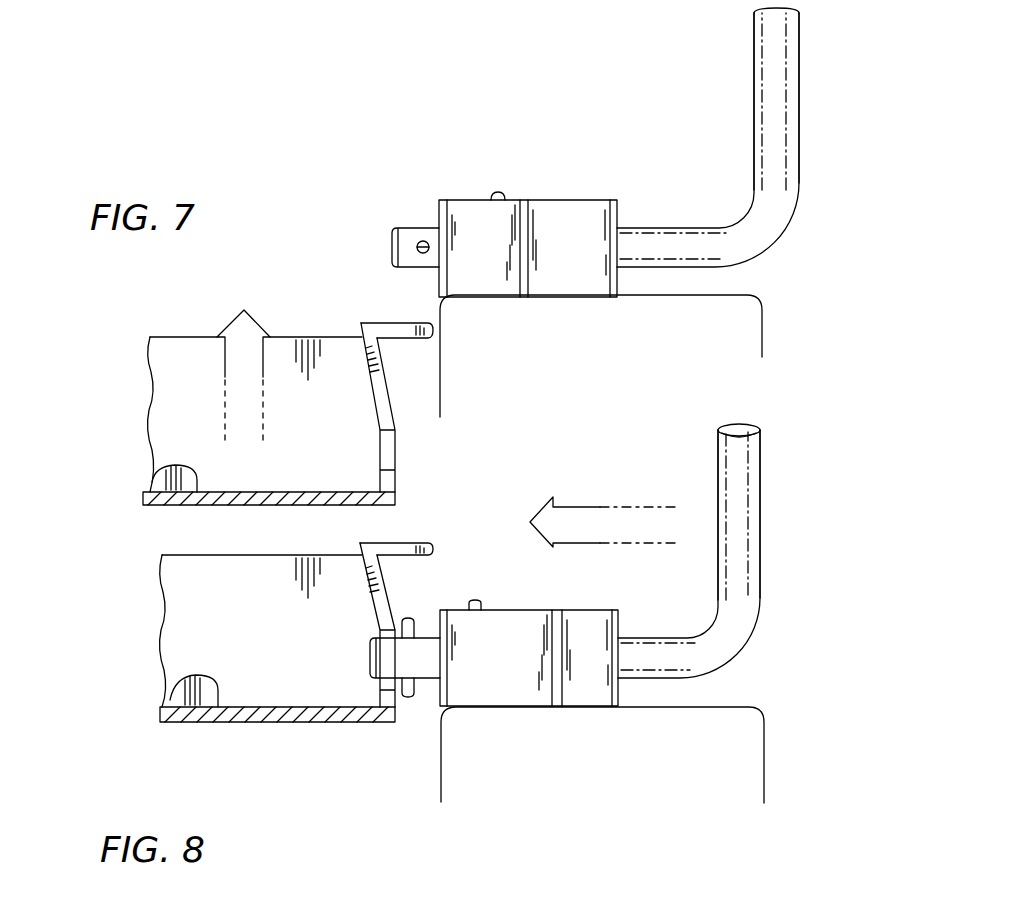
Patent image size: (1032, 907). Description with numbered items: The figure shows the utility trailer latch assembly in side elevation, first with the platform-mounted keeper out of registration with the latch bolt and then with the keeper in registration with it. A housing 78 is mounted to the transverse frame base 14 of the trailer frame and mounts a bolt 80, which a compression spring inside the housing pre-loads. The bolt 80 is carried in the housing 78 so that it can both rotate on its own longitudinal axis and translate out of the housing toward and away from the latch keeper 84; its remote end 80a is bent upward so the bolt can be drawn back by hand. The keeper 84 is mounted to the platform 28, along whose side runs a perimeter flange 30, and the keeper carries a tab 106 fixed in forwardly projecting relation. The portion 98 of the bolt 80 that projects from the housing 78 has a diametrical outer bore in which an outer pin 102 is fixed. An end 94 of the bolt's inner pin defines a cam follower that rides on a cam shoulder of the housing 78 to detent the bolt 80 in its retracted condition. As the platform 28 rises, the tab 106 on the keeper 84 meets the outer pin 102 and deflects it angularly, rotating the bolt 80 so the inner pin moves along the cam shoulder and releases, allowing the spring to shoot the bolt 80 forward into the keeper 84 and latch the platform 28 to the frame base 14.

In FIG. 7, the frame base 14 is at (762, 333).
In FIG. 8, the frame base 14 is at (765, 750).
In FIG. 7, the platform 28 is at (160, 470).
In FIG. 8, the platform 28 is at (175, 681).
In FIG. 7, the perimeter flange 30 is at (172, 390).
In FIG. 8, the perimeter flange 30 is at (175, 625).
In FIG. 7, the housing 78 is at (568, 210).
In FIG. 8, the housing 78 is at (510, 695).
In FIG. 7, the bolt 80 is at (770, 235).
In FIG. 8, the bolt 80 is at (740, 645).
In FIG. 7, the remote end 80a is at (798, 88).
In FIG. 8, the remote end 80a is at (760, 470).
In FIG. 7, the latch keeper 84 is at (373, 390).
In FIG. 8, the latch keeper 84 is at (375, 600).
In FIG. 7, the end of inner pin 94 is at (499, 193).
In FIG. 8, the end of inner pin 94 is at (480, 598).
In FIG. 7, the portion of bolt 98 is at (390, 240).
In FIG. 7, the outer pin 102 is at (423, 240).
In FIG. 8, the outer pin 102 is at (408, 700).
In FIG. 7, the tab 106 is at (410, 339).
In FIG. 8, the tab 106 is at (433, 540).